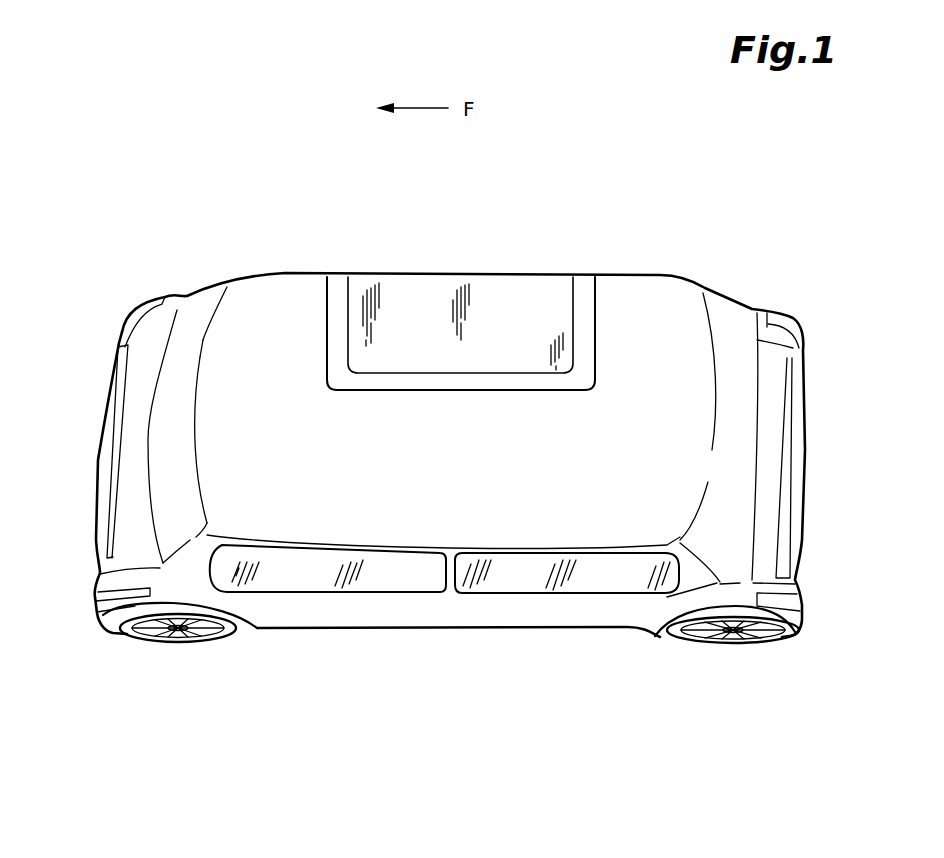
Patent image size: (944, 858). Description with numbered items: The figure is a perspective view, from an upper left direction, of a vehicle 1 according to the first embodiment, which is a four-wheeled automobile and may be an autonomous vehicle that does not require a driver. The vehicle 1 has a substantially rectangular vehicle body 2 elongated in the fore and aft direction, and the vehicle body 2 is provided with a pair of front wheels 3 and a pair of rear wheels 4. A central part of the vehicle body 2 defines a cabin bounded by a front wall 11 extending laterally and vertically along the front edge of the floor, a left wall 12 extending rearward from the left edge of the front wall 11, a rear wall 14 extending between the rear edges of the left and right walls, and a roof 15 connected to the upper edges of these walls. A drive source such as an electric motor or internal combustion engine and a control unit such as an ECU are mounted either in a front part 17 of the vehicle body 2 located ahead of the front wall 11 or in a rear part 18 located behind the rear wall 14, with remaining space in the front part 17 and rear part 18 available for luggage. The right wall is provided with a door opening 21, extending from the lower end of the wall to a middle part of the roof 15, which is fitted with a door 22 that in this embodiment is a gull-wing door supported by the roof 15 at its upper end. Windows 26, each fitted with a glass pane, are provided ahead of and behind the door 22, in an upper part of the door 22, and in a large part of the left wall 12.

The vehicle 1 is at (637, 193).
The vehicle body 2 is at (674, 272).
The front wheels 3 is at (137, 632).
The rear wheels 4 is at (750, 632).
The front wall 11 is at (170, 400).
The left wall 12 is at (483, 603).
The rear wall 14 is at (743, 443).
The roof 15 is at (270, 318).
The front part 17 is at (122, 450).
The rear part 18 is at (775, 503).
The door opening 21 is at (330, 292).
The door 22 is at (583, 275).
The windows 26 is at (498, 288).